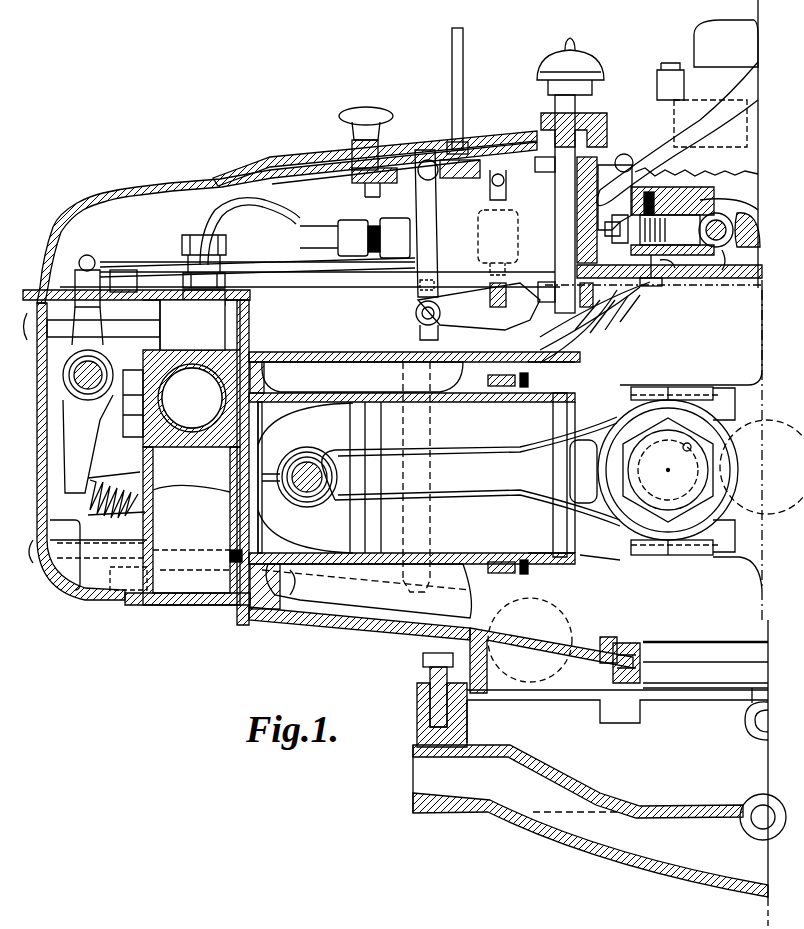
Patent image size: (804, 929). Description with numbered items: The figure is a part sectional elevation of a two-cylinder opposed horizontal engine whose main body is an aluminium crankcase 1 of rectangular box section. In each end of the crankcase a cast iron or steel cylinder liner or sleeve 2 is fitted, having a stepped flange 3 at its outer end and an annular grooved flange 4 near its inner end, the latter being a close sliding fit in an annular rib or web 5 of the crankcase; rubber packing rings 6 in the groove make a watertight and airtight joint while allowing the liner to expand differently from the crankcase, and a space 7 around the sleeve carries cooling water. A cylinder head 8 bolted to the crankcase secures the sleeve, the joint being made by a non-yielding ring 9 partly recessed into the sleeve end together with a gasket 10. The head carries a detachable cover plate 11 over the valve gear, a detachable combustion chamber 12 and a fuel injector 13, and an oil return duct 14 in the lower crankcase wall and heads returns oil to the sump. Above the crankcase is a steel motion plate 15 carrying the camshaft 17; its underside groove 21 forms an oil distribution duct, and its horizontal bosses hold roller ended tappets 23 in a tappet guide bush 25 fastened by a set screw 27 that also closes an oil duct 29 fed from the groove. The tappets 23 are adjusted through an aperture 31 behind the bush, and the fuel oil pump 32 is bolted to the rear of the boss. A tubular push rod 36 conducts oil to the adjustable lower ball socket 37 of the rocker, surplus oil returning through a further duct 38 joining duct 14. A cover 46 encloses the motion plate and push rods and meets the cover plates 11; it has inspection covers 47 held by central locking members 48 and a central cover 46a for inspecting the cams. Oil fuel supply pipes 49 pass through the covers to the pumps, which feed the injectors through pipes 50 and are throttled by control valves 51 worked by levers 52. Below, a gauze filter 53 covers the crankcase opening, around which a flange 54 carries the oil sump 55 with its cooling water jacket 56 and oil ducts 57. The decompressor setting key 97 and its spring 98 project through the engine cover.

The crankcase 1 is at (294, 356).
The cylinder liner or sleeve 2 is at (322, 392).
The stepped flange 3 is at (270, 389).
The annular grooved flange 4 is at (538, 380).
The annular rib or web 5 is at (455, 372).
The rubber packing rings 6 is at (500, 392).
The space 7 is at (360, 374).
The cylinder head 8 is at (143, 290).
The non-yielding ring 9 is at (234, 400).
The gasket 10 is at (246, 336).
The detachable cover plate 11 is at (37, 433).
The detachable combustion chamber 12 is at (191, 526).
The fuel injector 13 is at (190, 380).
The oil return duct 14 is at (568, 637).
The motion plate 15 is at (741, 282).
The camshaft 17 is at (721, 217).
The groove 21 is at (655, 292).
The roller ended tappets 23 is at (722, 280).
The tappet guide bush 25 is at (680, 205).
The set screw 27 is at (660, 186).
The oil duct 29 is at (675, 280).
The aperture 31 is at (618, 216).
The fuel oil pump 32 is at (481, 275).
The push rod 36 is at (295, 272).
The socket 37 is at (100, 270).
The further duct 38 is at (432, 432).
The cover 46 is at (170, 182).
The cover 46a is at (650, 100).
The inspection covers 47 is at (428, 130).
The central locking members 48 is at (350, 182).
The oil fuel supply pipes 49 is at (466, 72).
The pipes 50 is at (238, 205).
The control valves 51 is at (468, 218).
The levers 52 is at (437, 247).
The gauze filter 53 is at (705, 680).
The flange 54 is at (470, 655).
The oil sump 55 is at (590, 774).
The cooling water jacket 56 is at (700, 787).
The ducts 57 is at (748, 722).
The setting key 97 is at (594, 58).
The spring 98 is at (548, 100).